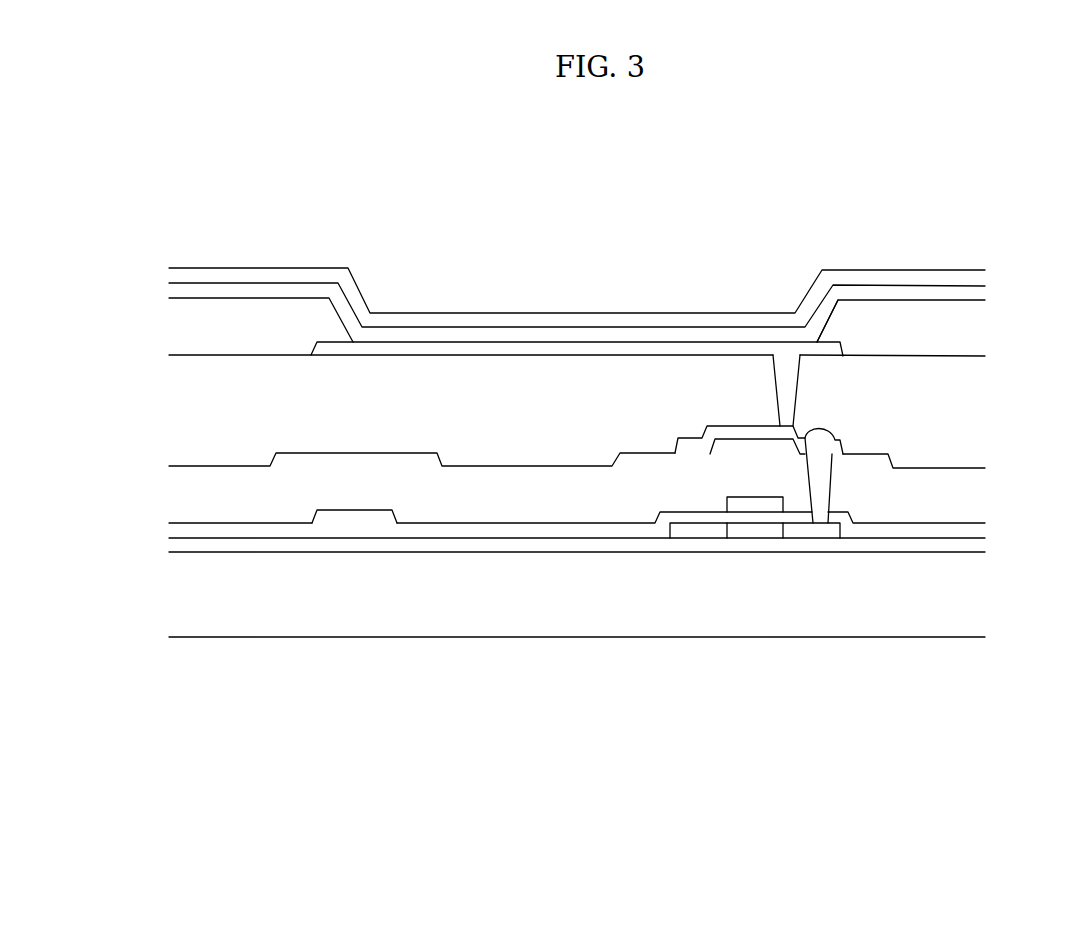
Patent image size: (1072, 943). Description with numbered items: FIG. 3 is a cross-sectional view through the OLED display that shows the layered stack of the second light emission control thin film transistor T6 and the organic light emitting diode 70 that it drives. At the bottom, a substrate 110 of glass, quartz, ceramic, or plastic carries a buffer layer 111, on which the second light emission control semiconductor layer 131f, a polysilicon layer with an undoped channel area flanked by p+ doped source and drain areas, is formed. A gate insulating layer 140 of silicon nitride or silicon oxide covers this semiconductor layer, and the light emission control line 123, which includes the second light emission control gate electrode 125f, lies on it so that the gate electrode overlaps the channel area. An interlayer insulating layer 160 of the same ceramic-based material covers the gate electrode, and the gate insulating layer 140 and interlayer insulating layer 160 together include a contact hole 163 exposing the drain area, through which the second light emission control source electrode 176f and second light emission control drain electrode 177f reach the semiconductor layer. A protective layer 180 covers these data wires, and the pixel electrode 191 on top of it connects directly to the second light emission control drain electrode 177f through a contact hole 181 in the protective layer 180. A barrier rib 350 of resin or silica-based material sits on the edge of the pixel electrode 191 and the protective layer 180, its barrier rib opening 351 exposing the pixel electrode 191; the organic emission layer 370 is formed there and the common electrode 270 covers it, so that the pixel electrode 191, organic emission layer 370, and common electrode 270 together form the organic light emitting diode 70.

The organic light emitting diode 70 is at (577, 264).
The pixel electrode 191 is at (493, 350).
The organic emission layer 370 is at (552, 335).
The common electrode 270 is at (477, 205).
The barrier rib 350 is at (972, 325).
The barrier rib opening 351 is at (822, 292).
The contact hole 181 is at (795, 377).
The protective layer 180 is at (972, 382).
The contact hole 163 is at (832, 470).
The interlayer insulating layer 160 is at (972, 492).
The gate insulating layer 140 is at (972, 528).
The buffer layer 111 is at (972, 545).
The substrate 110 is at (972, 605).
The light emission control line 123 is at (366, 518).
The second light emission control source electrode 176f is at (688, 532).
The second light emission control gate electrode 125f is at (747, 503).
The second light emission control semiconductor layer 131f is at (770, 535).
The second light emission control drain electrode 177f is at (820, 445).
The second light emission control thin film transistor T6 is at (758, 581).